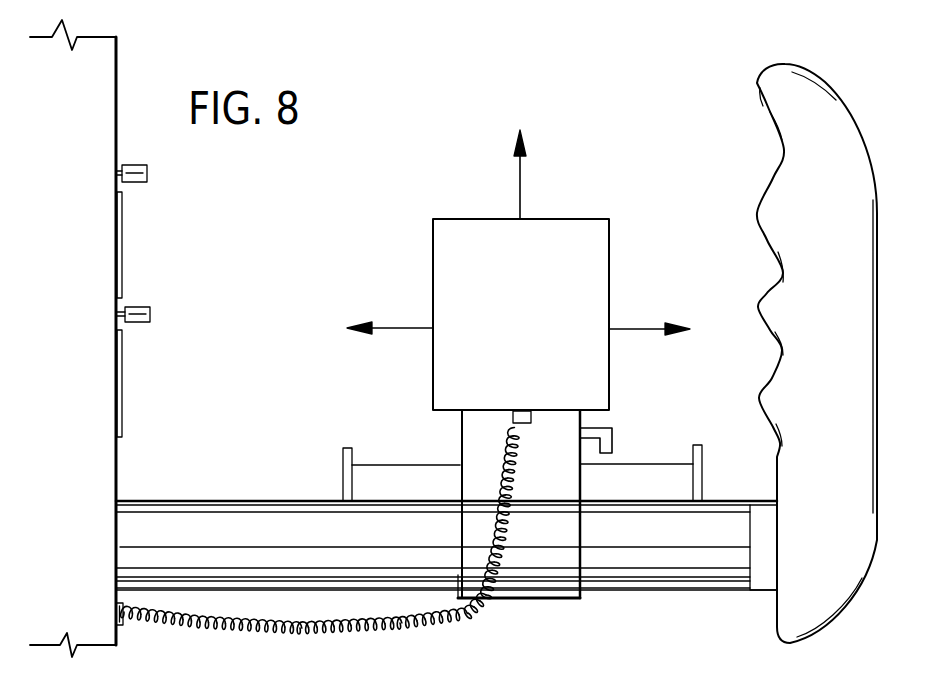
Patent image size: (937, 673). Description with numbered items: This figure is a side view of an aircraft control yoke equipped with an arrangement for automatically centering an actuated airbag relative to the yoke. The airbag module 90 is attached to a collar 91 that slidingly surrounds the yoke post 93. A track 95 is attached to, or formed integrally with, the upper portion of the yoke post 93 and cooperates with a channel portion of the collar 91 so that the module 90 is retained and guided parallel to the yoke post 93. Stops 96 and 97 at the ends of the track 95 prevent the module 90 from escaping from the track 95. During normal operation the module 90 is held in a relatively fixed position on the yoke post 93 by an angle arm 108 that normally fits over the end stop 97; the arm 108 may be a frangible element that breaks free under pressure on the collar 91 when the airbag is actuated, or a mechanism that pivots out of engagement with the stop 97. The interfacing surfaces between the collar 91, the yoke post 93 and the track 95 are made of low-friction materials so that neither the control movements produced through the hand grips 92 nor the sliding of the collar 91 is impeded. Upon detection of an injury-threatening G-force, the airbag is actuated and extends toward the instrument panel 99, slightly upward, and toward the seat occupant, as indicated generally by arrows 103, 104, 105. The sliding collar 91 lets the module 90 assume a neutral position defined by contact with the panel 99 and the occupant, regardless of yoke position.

The airbag module 90 is at (545, 347).
The collar 91 is at (552, 488).
The hand grips 92 is at (803, 157).
The yoke post 93 is at (207, 500).
The track 95 is at (423, 483).
The stop 96 is at (343, 455).
The end stop 97 is at (703, 450).
The instrument panel 99 is at (123, 233).
The arrow 103 is at (410, 328).
The arrow 104 is at (518, 180).
The arrow 105 is at (645, 328).
The angle arm 108 is at (612, 433).